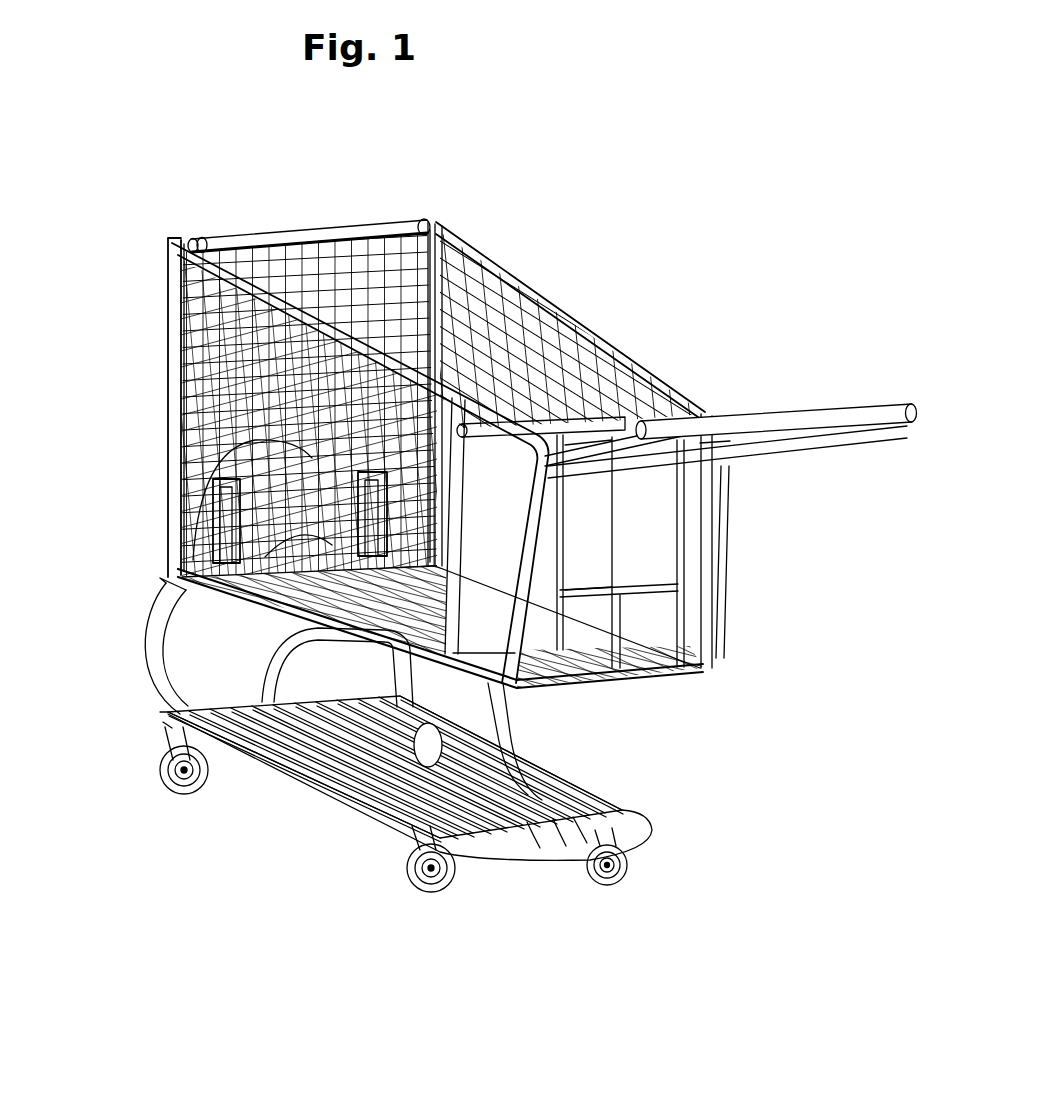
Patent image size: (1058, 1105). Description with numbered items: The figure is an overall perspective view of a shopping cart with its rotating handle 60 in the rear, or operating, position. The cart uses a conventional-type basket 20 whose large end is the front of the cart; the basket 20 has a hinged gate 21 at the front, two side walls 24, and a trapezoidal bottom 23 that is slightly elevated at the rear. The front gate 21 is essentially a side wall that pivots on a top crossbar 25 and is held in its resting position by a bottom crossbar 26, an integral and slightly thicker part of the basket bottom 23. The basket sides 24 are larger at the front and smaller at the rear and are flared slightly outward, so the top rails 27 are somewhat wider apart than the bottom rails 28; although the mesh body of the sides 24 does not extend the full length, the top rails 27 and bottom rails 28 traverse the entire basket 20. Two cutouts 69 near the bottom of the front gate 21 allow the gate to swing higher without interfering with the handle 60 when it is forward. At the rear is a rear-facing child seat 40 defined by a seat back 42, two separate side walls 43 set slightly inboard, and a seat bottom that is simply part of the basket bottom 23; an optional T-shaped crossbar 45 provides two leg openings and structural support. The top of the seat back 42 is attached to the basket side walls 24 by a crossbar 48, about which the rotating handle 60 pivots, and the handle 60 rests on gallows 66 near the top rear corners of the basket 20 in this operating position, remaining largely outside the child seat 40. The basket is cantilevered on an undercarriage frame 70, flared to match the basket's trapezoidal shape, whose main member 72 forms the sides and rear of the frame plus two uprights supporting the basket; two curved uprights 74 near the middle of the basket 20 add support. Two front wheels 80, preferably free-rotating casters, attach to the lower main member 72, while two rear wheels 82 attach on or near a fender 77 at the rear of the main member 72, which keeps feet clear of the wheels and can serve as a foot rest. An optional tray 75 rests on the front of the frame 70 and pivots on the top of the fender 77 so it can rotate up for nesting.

The basket 20 is at (515, 218).
The hinged gate 21 is at (340, 288).
The bottom 23 is at (247, 602).
The side walls 24 is at (533, 357).
The top crossbar 25 is at (257, 233).
The bottom crossbar 26 is at (198, 512).
The top rails 27 is at (223, 273).
The bottom rails 28 is at (190, 590).
The child seat 40 is at (757, 675).
The seat back 42 is at (608, 574).
The side walls 43 is at (679, 497).
The T-shaped crossbar 45 is at (637, 585).
The crossbar 48 is at (587, 420).
The rotating handle 60 is at (774, 337).
The gallows 66 is at (572, 493).
The cutouts 69 is at (200, 503).
The undercarriage frame 70 is at (257, 847).
The main member 72 is at (365, 802).
The curved uprights 74 is at (167, 727).
The tray 75 is at (523, 790).
The fender 77 is at (610, 835).
The front wheels 80 is at (200, 777).
The rear wheels 82 is at (417, 890).